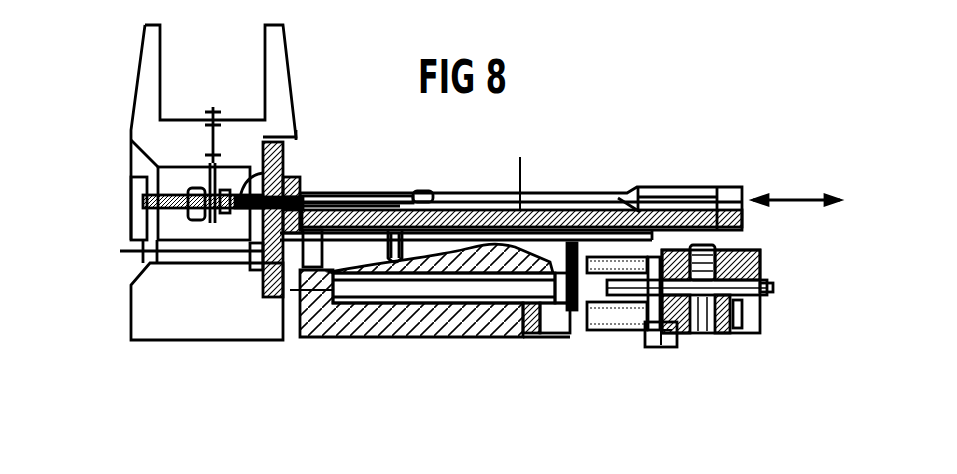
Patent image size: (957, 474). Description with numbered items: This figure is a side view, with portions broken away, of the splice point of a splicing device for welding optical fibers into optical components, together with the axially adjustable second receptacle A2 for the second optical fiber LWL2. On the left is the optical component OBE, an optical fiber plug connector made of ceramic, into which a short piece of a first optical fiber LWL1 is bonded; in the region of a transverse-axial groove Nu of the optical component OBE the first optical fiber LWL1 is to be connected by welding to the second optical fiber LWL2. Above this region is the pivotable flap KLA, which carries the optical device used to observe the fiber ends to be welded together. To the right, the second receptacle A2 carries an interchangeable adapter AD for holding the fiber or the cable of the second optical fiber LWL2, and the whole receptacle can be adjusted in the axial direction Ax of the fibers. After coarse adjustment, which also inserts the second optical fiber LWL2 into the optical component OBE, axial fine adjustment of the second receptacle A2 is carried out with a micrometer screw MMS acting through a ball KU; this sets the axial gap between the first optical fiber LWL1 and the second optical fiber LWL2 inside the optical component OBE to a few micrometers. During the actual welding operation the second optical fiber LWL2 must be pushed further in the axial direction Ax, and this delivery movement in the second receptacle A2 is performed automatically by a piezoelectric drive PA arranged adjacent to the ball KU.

The flap KLA is at (140, 142).
The first optical fiber LWL1 is at (133, 213).
The transverse-axial groove Nu is at (192, 200).
The second optical fiber LWL2 is at (285, 180).
The adapter AD is at (551, 210).
The axial direction Ax is at (793, 200).
The optical component OBE is at (182, 225).
The piezoelectric drive PA is at (405, 297).
The second receptacle A2 is at (497, 350).
The ball KU is at (578, 263).
The micrometer screw MMS is at (695, 350).